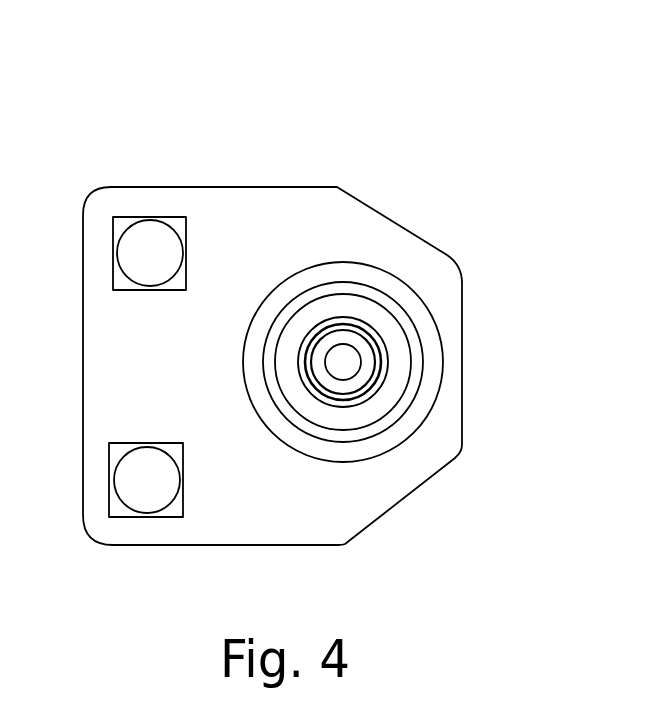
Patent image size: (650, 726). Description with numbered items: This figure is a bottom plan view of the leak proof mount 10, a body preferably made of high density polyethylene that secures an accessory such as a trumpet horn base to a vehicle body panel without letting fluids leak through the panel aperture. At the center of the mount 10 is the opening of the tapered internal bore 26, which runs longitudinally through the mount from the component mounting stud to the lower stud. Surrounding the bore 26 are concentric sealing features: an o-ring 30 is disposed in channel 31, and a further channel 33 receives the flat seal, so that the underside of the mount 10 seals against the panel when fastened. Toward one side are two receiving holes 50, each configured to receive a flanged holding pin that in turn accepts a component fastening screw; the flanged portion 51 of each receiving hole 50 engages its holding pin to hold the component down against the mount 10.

The leak proof mount 10 is at (285, 135).
The tapered internal bore 26 is at (345, 337).
The o-ring 30 is at (392, 433).
The channel 31 is at (395, 340).
The channel 33 is at (408, 298).
The receiving hole 50 is at (124, 231).
The flanged portion 51 is at (166, 284).